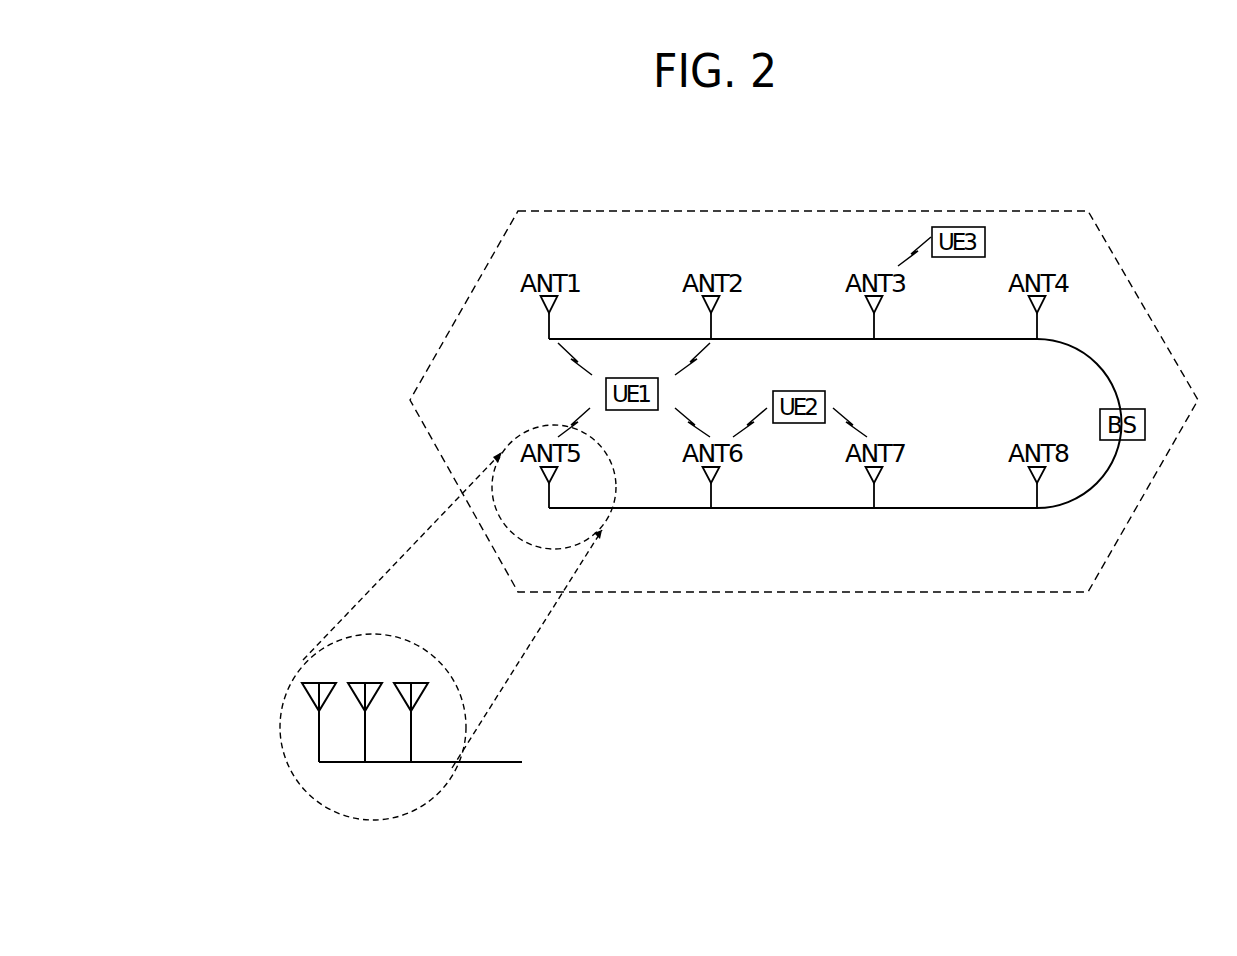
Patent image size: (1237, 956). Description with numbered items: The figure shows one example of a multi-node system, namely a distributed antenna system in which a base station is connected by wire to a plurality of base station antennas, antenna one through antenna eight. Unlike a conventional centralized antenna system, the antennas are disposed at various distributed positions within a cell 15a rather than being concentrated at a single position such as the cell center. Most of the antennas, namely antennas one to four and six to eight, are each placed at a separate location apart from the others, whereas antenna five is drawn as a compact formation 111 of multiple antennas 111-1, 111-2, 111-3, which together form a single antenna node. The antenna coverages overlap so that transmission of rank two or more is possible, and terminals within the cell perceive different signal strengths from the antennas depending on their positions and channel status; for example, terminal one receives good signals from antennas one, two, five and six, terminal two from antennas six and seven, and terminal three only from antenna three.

The cell 15a is at (880, 211).
The antenna node 111 is at (401, 619).
The antenna 111-1 is at (313, 683).
The antenna 111-2 is at (370, 683).
The antenna 111-3 is at (418, 683).